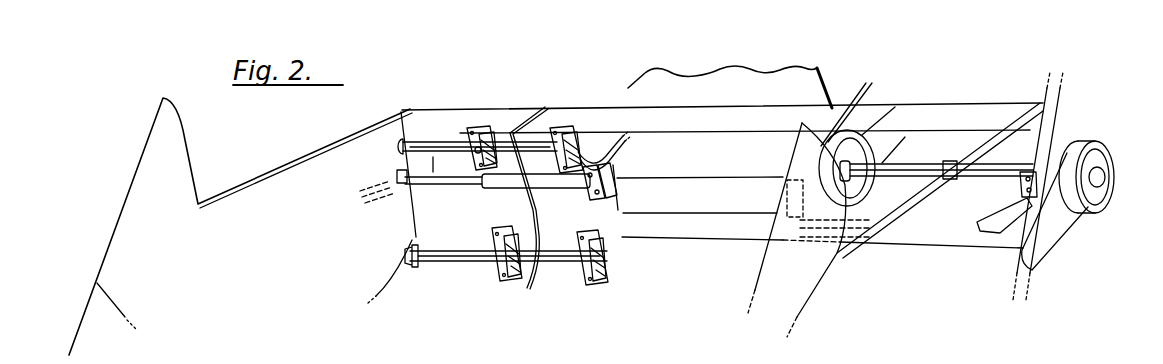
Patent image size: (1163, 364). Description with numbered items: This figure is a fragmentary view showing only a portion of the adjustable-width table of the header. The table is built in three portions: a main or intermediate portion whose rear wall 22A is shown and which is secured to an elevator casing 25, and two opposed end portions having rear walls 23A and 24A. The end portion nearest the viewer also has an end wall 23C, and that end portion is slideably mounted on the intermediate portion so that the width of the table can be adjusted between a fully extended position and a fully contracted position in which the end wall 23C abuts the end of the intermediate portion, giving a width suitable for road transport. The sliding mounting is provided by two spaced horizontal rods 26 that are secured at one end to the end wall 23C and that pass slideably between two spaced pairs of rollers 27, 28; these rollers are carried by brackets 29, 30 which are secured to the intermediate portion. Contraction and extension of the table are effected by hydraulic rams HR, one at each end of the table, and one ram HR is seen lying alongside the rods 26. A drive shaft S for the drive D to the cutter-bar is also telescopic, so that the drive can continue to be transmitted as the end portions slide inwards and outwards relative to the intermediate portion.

The rear wall 22A is at (752, 112).
The rear wall 23A is at (470, 108).
The end wall 23C is at (248, 195).
The rear wall 24A is at (942, 112).
The elevator casing 25 is at (630, 89).
The horizontal rods 26 is at (433, 145).
The rollers 27 is at (488, 128).
The rollers 28 is at (562, 175).
The bracket 29 is at (476, 152).
The bracket 30 is at (583, 180).
The hydraulic ram HR is at (518, 183).
The drive shaft S is at (907, 172).
The drive D is at (1073, 240).